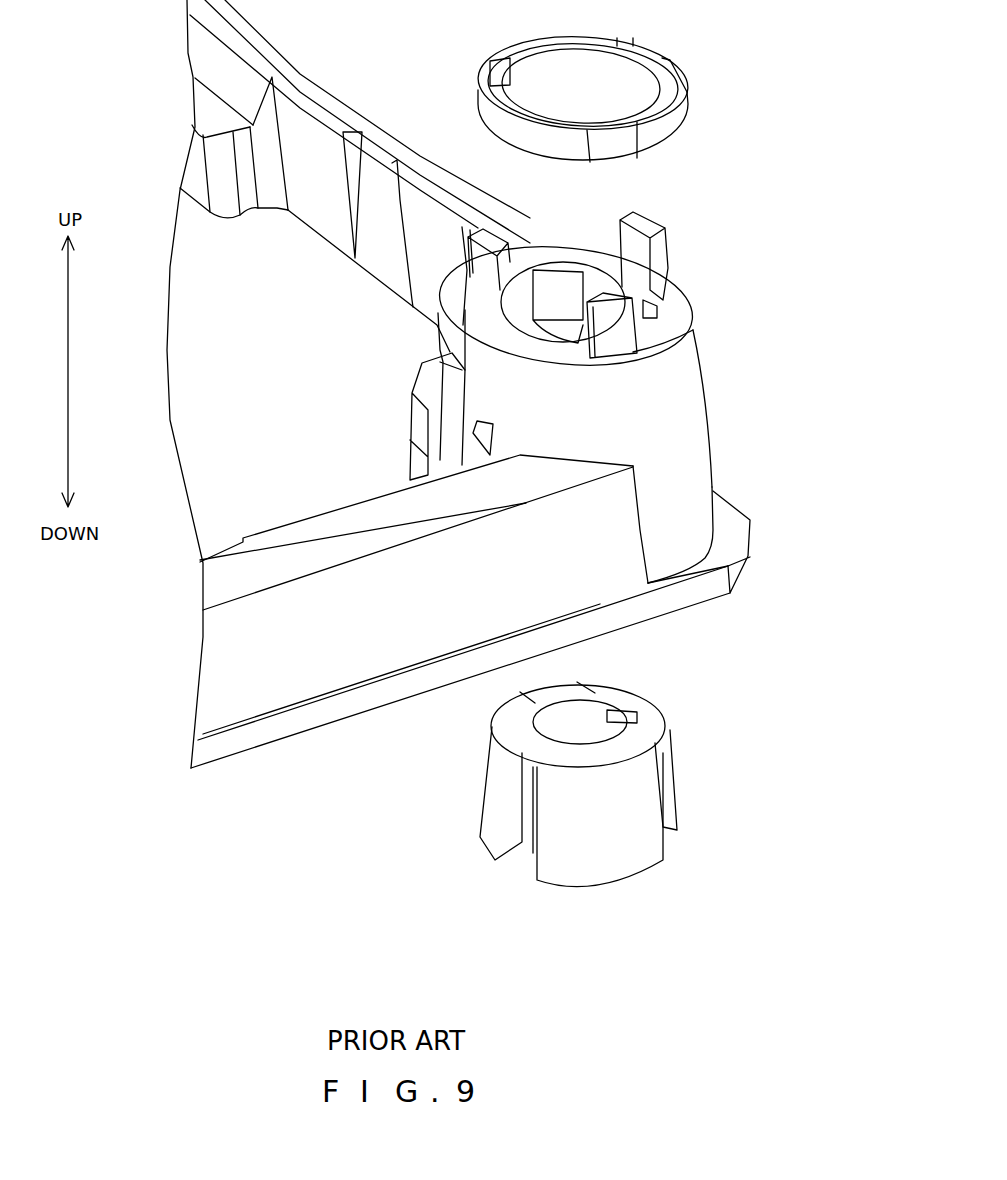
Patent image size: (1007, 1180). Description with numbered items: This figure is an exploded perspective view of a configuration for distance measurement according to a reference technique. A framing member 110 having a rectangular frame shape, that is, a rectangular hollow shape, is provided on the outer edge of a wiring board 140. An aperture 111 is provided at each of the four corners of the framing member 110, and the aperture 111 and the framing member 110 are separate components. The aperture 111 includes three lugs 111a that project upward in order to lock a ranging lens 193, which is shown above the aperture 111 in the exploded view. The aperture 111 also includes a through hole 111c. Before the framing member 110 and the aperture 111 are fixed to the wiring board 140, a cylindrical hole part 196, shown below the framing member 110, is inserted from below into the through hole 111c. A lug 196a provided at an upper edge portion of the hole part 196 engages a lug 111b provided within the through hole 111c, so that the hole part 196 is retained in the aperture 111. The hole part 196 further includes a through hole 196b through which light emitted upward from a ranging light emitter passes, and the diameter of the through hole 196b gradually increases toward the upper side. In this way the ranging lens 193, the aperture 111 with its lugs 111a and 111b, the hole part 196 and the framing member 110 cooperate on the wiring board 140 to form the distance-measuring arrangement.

The framing member 110 is at (587, 597).
The aperture 111 is at (493, 442).
The lugs 111a is at (650, 223).
The lug 111b is at (563, 310).
The through hole 111c is at (647, 314).
The wiring board 140 is at (308, 725).
The ranging lens 193 is at (670, 85).
The hole part 196 is at (572, 784).
The lug 196a is at (643, 738).
The through hole 196b is at (607, 715).